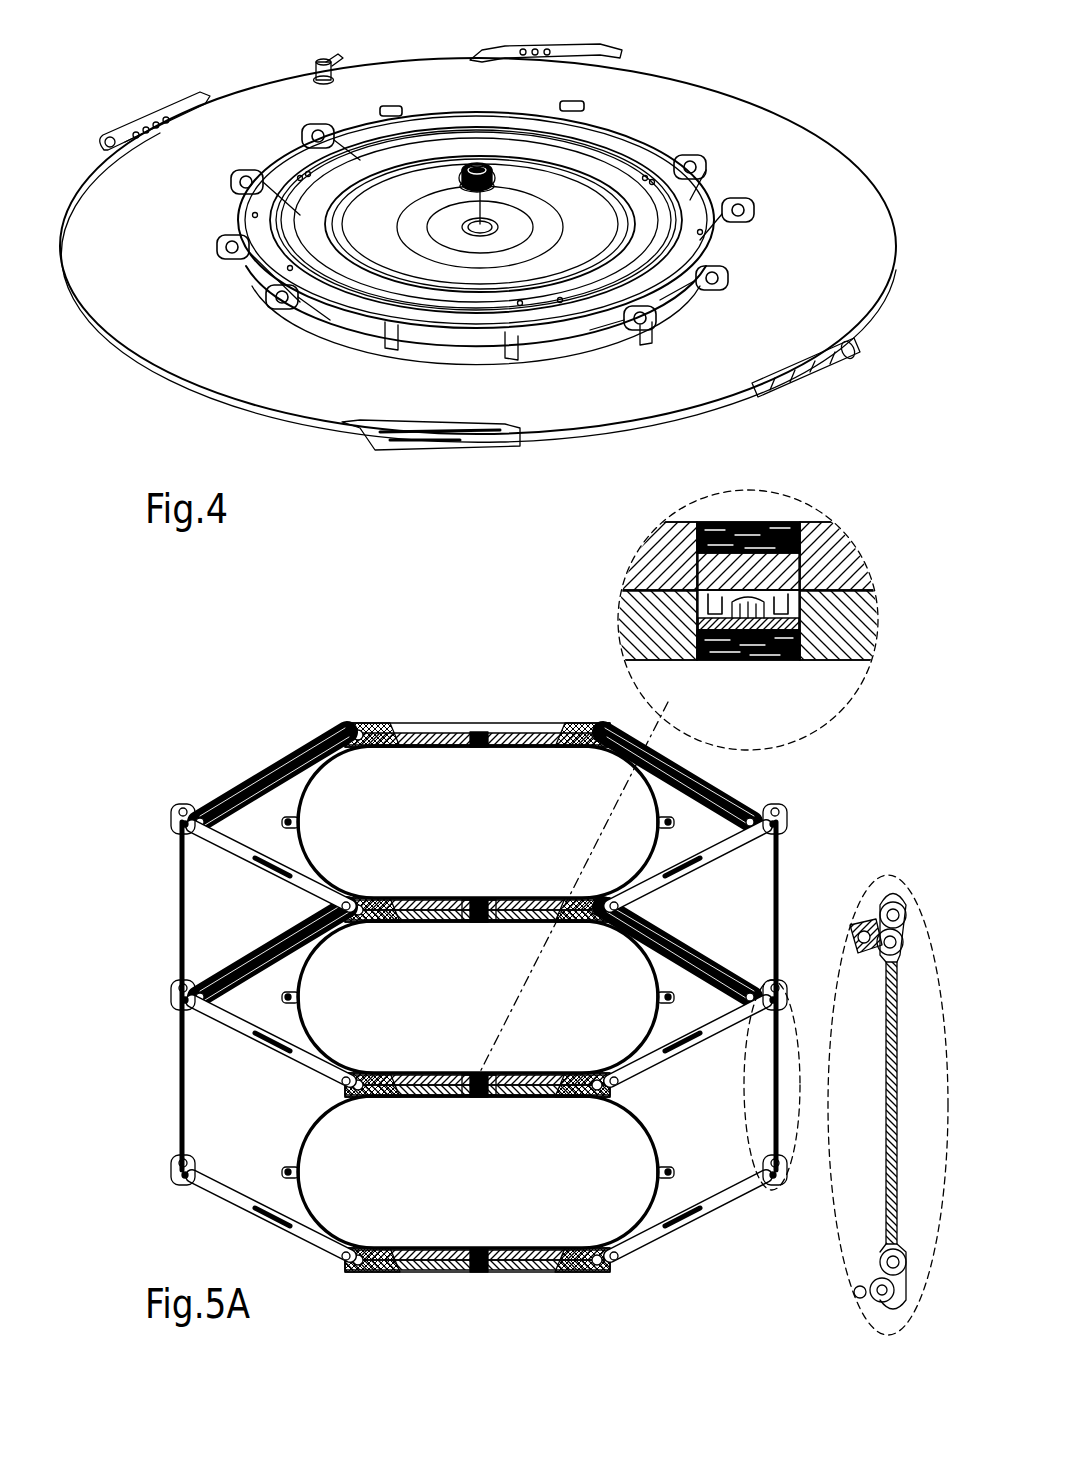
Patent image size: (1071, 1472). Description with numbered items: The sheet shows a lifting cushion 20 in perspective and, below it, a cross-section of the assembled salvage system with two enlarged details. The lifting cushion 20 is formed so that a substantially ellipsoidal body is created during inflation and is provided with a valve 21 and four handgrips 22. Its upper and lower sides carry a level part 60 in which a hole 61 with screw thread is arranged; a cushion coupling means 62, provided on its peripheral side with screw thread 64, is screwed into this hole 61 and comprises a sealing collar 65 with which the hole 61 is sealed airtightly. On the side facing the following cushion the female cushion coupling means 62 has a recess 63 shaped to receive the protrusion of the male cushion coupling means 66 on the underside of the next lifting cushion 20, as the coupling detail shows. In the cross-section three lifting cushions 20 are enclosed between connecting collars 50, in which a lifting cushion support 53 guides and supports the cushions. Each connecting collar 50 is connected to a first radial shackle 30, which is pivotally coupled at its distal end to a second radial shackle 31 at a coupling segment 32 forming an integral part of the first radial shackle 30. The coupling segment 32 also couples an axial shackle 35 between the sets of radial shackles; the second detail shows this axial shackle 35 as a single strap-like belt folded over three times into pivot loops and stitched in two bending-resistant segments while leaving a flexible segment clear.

In FIG. 4, the lifting cushion 20 is at (690, 95).
In FIG. 5A, the lifting cushion 20 is at (340, 775).
In FIG. 4, the valve 21 is at (320, 70).
In FIG. 4, the handgrips 22 is at (850, 370).
In FIG. 5A, the first radial shackle 30 is at (225, 850).
In FIG. 5A, the second radial shackle 31 is at (255, 775).
In FIG. 5A, the coupling segment 32 is at (178, 1000).
In FIG. 5A, the axial shackle 35 is at (180, 925).
In FIG. 4, the connecting collar 50 is at (735, 228).
In FIG. 5A, the lifting cushion support 53 is at (378, 735).
In FIG. 4, the level part 60 is at (505, 235).
In FIG. 4, the hole 61 is at (462, 232).
In FIG. 4, the cushion coupling means 62 is at (478, 167).
In FIG. 5A, the cushion coupling means 62 is at (475, 738).
In FIG. 4, the recess 63 is at (820, 585).
In FIG. 4, the screw thread 64 is at (497, 182).
In FIG. 4, the sealing collar 65 is at (497, 178).
In FIG. 4, the male cushion coupling means 66 is at (718, 572).
In FIG. 5A, the male cushion coupling means 66 is at (478, 905).